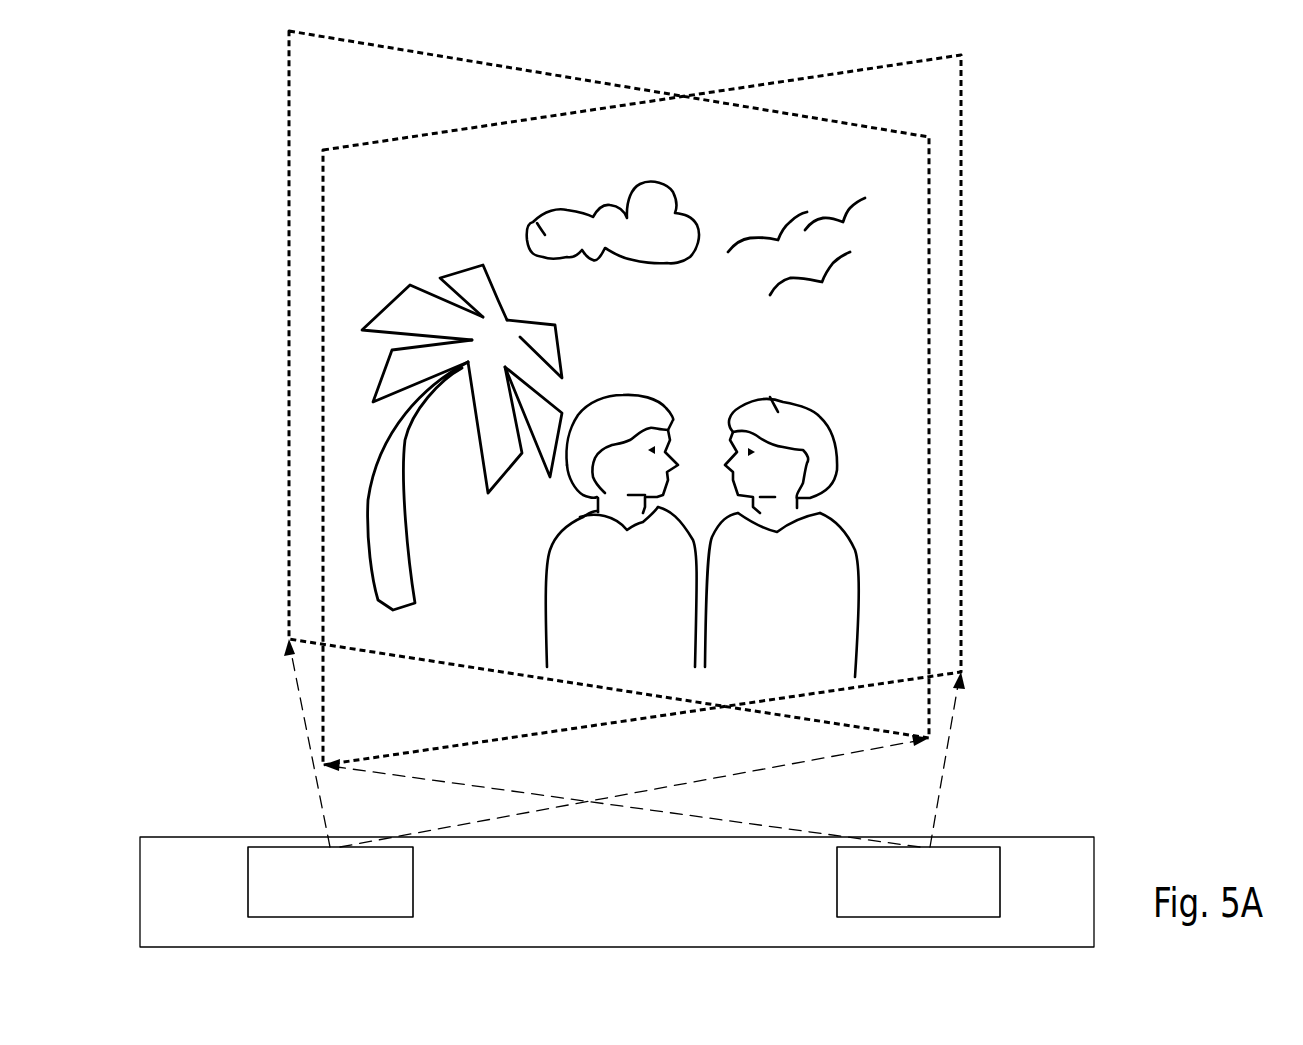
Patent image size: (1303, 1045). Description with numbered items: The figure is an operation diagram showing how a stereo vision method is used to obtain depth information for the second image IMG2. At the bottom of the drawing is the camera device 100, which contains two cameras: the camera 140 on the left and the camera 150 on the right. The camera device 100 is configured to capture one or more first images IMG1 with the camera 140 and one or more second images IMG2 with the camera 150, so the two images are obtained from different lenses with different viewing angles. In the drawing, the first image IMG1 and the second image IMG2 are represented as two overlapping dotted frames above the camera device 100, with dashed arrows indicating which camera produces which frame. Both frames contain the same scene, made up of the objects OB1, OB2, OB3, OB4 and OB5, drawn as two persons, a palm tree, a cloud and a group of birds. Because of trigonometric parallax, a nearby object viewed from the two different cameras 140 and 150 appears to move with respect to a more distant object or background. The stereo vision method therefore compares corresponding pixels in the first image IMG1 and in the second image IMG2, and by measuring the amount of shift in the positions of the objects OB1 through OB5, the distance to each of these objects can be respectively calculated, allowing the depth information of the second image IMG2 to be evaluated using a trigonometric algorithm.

The first image IMG1 is at (287, 275).
The second image IMG2 is at (963, 493).
The object OB1 is at (560, 340).
The object OB2 is at (597, 602).
The object OB3 is at (778, 412).
The object OB4 is at (540, 228).
The object OB5 is at (778, 230).
The camera device 100 is at (712, 937).
The camera 140 is at (390, 896).
The camera 150 is at (978, 897).